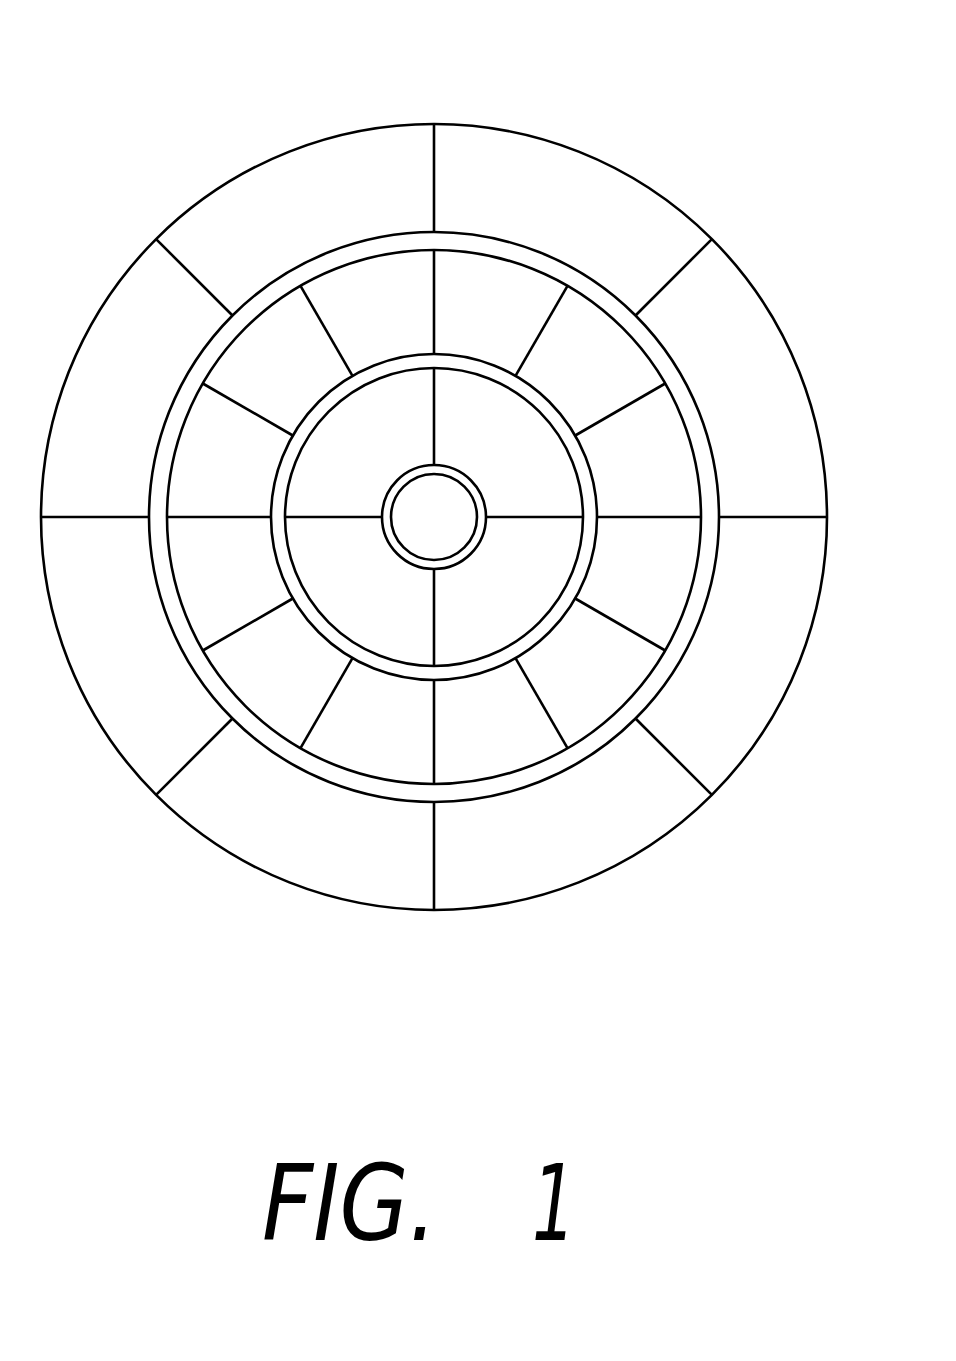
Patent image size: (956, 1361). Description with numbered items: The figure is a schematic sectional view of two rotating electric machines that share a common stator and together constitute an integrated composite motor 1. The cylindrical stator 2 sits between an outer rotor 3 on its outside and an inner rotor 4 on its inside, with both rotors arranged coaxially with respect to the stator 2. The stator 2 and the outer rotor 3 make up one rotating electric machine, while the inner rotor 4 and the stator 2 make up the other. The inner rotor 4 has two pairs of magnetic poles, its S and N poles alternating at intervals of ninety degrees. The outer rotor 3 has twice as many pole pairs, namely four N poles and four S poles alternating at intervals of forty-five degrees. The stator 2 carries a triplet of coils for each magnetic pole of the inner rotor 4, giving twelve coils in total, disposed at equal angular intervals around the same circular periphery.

The integrated composite motor 1 is at (621, 136).
The stator 2 is at (463, 277).
The outer rotor 3 is at (349, 183).
The inner rotor 4 is at (383, 420).